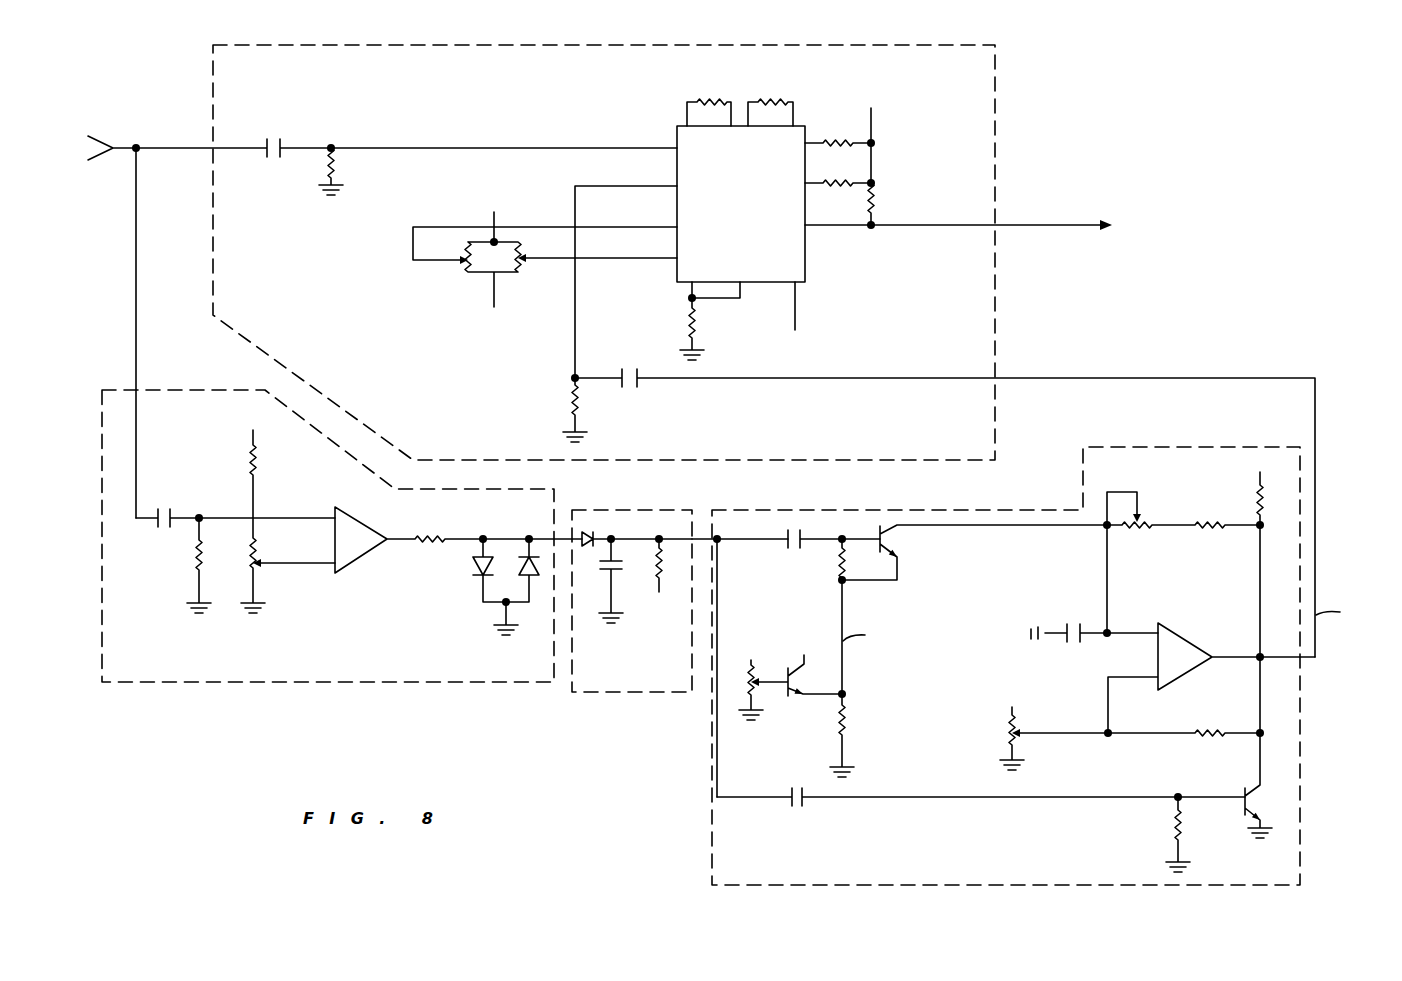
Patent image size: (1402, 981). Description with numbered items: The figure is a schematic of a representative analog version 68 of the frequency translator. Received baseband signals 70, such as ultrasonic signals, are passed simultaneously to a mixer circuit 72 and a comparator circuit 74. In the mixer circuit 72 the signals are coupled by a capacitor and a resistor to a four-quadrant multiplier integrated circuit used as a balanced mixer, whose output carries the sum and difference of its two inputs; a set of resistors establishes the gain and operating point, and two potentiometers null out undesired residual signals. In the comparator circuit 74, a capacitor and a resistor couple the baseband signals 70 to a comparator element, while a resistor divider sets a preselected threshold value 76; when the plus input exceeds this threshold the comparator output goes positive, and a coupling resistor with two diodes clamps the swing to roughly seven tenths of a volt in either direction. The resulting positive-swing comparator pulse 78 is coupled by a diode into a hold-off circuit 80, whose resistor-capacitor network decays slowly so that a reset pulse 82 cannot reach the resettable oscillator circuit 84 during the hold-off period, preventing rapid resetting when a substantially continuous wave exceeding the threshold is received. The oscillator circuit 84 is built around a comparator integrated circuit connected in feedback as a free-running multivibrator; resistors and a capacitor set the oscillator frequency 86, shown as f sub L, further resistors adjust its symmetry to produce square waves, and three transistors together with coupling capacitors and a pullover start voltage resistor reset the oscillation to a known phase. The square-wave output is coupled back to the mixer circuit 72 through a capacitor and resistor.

The analog version 68 is at (552, 726).
The baseband signals 70 is at (87, 84).
The mixer circuit 72 is at (212, 73).
The comparator circuit 74 is at (307, 686).
The threshold value 76 is at (316, 562).
The positive-swing comparator pulse 78 is at (557, 523).
The hold-off circuit 80 is at (640, 693).
The reset pulse 82 is at (699, 530).
The oscillator circuit 84 is at (712, 733).
The oscillator frequency 86 is at (1316, 503).